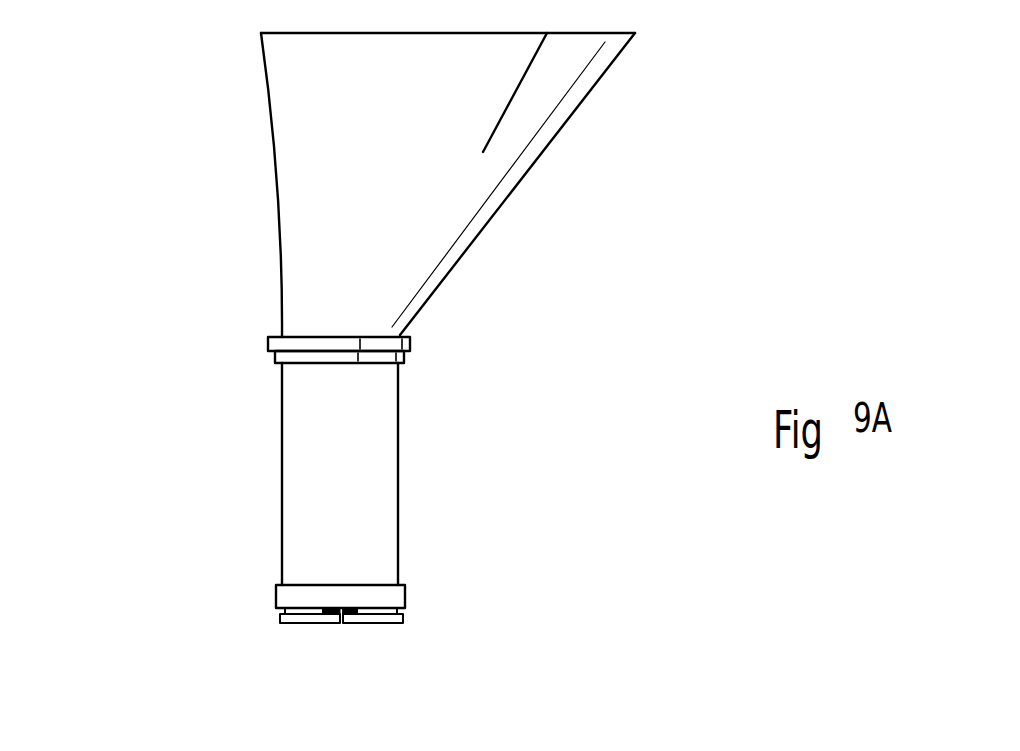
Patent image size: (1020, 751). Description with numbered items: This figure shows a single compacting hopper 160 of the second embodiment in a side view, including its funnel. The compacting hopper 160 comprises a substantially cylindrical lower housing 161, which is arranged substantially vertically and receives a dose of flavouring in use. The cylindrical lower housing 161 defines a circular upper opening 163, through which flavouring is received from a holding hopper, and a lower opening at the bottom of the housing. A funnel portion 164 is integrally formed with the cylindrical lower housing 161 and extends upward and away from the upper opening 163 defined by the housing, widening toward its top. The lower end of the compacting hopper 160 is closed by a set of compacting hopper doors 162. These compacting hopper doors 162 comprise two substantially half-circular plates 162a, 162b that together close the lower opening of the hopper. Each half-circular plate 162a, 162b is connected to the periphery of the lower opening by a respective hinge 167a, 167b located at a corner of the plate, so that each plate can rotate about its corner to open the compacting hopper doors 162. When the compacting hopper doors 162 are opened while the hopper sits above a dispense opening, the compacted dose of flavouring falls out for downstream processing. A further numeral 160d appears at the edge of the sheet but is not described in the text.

The compacting hopper 160 is at (533, 445).
The cylindrical lower housing 161 is at (282, 470).
The compacting hopper doors 162 is at (405, 632).
The half-circular plate 162a is at (380, 625).
The half-circular plate 162b is at (287, 625).
The upper opening 163 is at (332, 311).
The funnel portion 164 is at (485, 228).
The hinge 167a is at (348, 625).
The hinge 167b is at (333, 625).
The spout assembly portion 160d is at (463, 736).